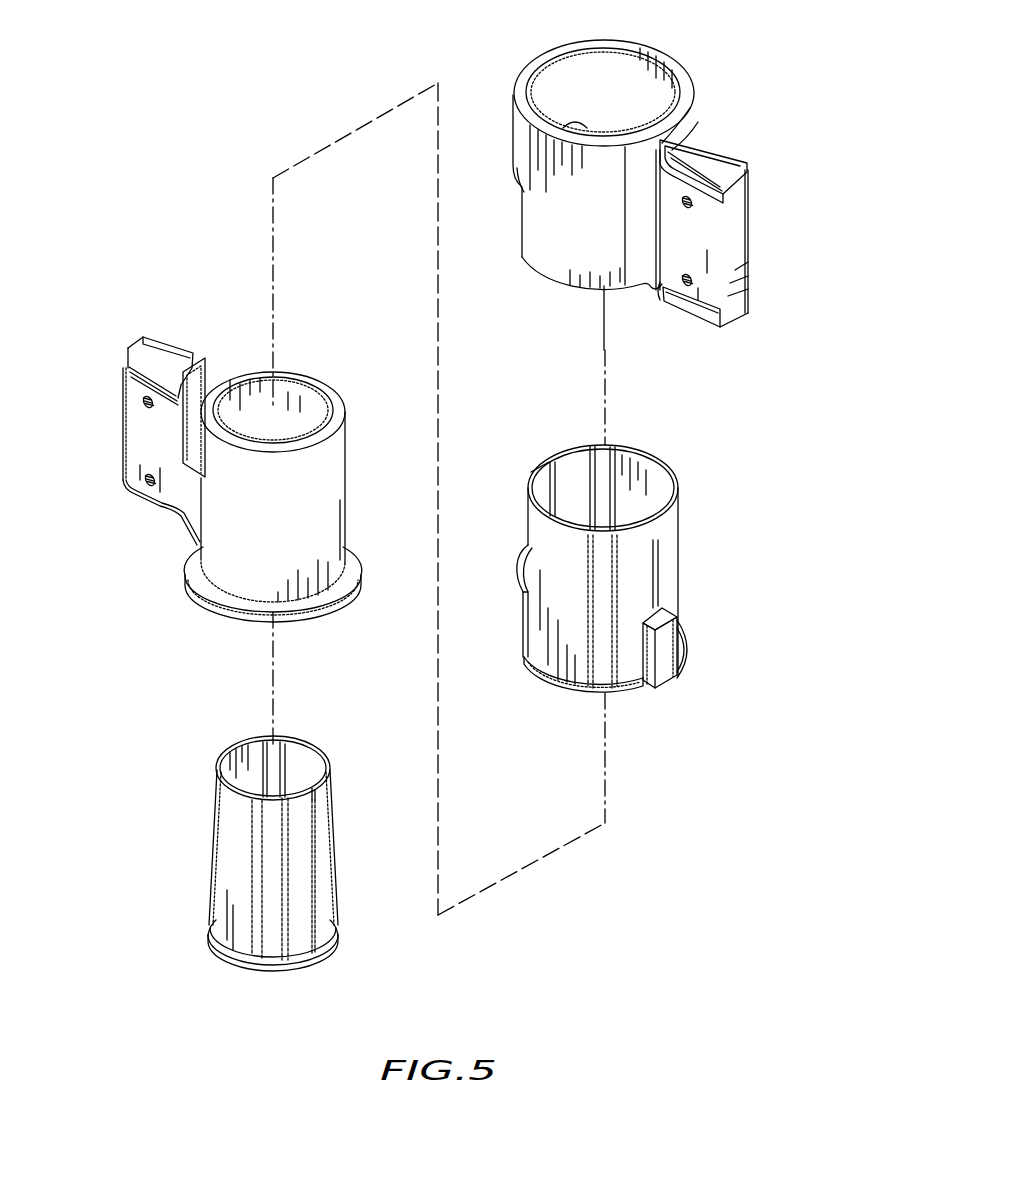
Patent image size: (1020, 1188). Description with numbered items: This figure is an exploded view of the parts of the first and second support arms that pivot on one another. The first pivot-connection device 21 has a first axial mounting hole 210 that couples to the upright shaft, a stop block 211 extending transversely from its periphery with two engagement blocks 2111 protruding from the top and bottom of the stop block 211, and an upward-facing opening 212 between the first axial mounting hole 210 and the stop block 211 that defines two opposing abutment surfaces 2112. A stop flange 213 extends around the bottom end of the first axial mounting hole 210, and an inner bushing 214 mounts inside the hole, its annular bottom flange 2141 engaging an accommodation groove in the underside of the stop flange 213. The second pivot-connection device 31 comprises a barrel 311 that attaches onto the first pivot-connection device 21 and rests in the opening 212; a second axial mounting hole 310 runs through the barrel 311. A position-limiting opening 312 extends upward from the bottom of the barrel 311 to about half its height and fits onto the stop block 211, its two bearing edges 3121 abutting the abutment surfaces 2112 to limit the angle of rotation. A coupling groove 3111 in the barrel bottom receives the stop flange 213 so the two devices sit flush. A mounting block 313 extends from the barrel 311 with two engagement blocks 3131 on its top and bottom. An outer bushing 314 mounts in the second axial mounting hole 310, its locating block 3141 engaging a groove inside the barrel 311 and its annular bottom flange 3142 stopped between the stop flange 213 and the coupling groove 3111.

The first pivot-connection device 21 is at (224, 476).
The first axial mounting hole 210 is at (304, 405).
The stop block 211 is at (143, 428).
The engagement block 2111 is at (150, 343).
The abutment surface 2112 is at (187, 525).
The opening 212 is at (207, 378).
The stop flange 213 is at (332, 594).
The inner bushing 214 is at (236, 862).
The annular bottom flange 2141 is at (209, 929).
The second pivot-connection device 31 is at (633, 175).
The second axial mounting hole 310 is at (636, 92).
The barrel 311 is at (582, 175).
The coupling groove 3111 is at (645, 290).
The position-limiting opening 312 is at (512, 197).
The bearing edge 3121 is at (522, 220).
The mounting block 313 is at (693, 249).
The engagement block 3131 is at (718, 158).
The outer bushing 314 is at (654, 576).
The locating block 3141 is at (668, 646).
The annular bottom flange 3142 is at (636, 688).